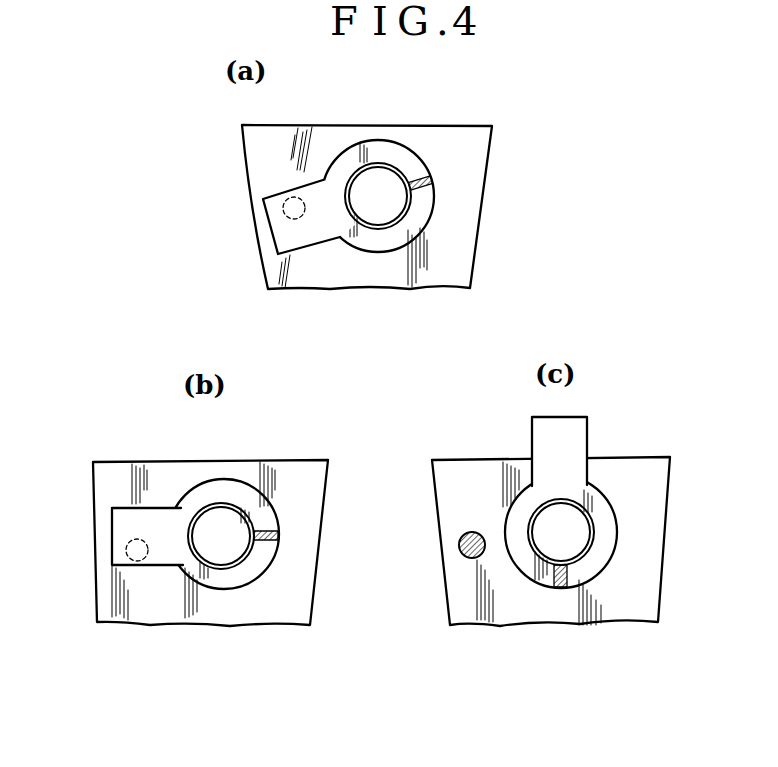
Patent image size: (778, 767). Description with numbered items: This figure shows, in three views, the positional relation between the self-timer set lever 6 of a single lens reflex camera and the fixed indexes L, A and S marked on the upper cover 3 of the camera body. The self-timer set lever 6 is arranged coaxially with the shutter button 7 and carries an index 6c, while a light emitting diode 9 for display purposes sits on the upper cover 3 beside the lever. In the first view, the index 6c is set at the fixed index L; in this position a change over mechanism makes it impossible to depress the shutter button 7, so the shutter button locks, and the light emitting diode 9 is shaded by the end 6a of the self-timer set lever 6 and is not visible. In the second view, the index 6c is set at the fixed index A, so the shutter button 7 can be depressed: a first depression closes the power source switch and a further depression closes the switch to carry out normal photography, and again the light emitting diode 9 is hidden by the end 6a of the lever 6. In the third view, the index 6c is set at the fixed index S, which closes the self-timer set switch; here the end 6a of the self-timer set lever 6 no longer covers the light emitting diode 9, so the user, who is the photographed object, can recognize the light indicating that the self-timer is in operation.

The upper cover of the camera body 3 is at (475, 150).
The self-timer set lever 6 is at (387, 142).
The end of the self-timer set lever 6a is at (282, 240).
The index on the self-timer set lever 6c is at (416, 172).
The shutter button 7 is at (398, 207).
The light emitting diode 9 is at (280, 210).
The fixed index L is at (438, 176).
The fixed index A is at (440, 194).
The fixed index S is at (380, 256).